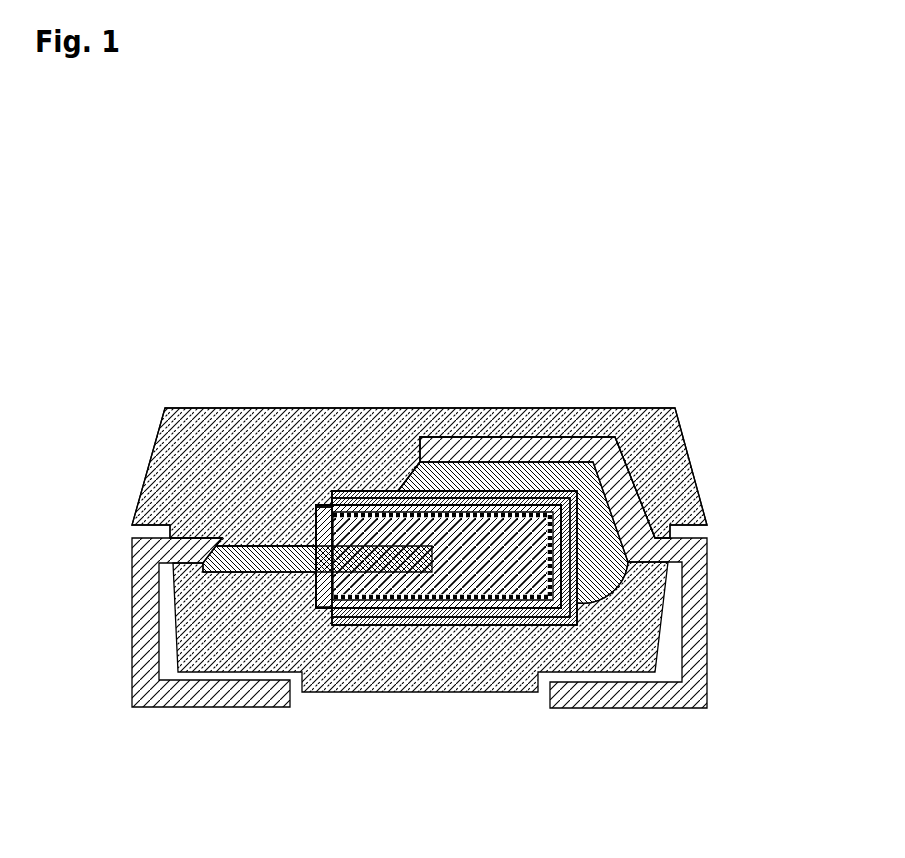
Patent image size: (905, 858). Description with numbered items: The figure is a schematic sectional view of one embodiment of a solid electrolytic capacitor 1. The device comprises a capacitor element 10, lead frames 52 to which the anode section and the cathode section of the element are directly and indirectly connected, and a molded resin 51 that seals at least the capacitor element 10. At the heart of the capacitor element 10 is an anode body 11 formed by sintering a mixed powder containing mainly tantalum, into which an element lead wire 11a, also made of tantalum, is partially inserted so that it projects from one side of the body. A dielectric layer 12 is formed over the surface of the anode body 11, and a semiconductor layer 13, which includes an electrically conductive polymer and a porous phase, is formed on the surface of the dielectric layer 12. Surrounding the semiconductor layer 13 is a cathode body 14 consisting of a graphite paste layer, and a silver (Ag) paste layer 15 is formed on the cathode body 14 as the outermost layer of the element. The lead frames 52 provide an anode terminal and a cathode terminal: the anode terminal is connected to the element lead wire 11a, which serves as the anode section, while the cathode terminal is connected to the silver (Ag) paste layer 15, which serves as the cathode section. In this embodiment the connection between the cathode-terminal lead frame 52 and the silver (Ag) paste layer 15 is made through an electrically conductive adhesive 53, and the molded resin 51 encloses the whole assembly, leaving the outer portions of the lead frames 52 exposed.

The solid electrolytic capacitor 1 is at (558, 282).
The capacitor element 10 is at (337, 457).
The anode body 11 is at (252, 556).
The element lead wire 11a is at (316, 538).
The dielectric layer 12 is at (355, 596).
The semiconductor layer 13 is at (397, 597).
The cathode body 14 is at (450, 613).
The silver (Ag) paste layer 15 is at (500, 613).
The molded resin 51 is at (200, 420).
The lead frame 52 is at (472, 447).
The electrically conductive adhesive 53 is at (611, 505).